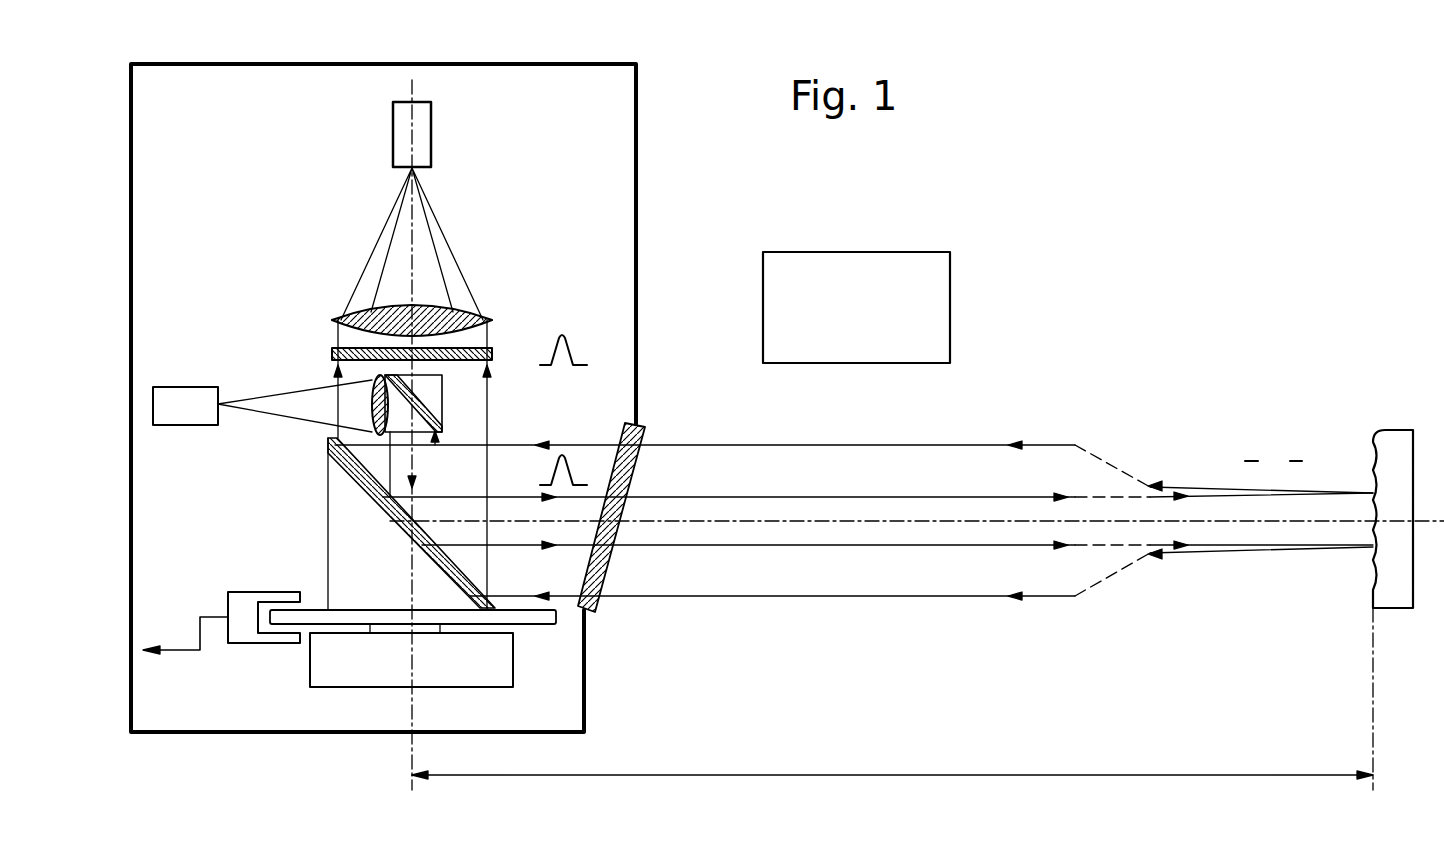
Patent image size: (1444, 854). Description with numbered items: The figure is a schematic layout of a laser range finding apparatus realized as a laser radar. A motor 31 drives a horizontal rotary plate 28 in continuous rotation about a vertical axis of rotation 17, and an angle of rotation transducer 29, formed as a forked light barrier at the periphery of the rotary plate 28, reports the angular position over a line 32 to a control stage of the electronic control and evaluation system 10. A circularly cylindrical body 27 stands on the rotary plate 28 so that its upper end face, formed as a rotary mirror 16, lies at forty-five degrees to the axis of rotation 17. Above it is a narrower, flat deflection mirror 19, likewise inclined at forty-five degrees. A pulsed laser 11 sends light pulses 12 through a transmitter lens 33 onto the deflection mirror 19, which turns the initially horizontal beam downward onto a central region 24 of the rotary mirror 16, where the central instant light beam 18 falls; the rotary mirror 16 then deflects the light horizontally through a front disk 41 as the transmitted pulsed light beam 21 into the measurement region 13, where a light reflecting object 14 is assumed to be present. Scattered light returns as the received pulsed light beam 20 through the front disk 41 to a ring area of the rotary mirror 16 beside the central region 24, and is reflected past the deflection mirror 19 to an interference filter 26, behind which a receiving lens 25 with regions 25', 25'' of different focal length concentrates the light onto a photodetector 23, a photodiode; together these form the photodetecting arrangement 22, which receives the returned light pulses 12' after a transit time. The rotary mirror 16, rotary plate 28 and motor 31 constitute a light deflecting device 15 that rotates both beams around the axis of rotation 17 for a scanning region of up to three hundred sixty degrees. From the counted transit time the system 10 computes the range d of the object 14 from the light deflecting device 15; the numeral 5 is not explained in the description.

The retroreflector surface 5 is at (1425, 518).
The electronic control and evaluation system 10 is at (935, 320).
The pulsed laser 11 is at (190, 400).
The light pulses 12 is at (577, 444).
The received light pulses 12' is at (581, 330).
The measurement region 13 is at (1273, 461).
The light reflecting object 14 is at (1398, 608).
The light deflecting device 15 is at (288, 662).
The rotary mirror 16 is at (350, 481).
The axis of rotation 17 is at (418, 694).
The central instant light beam 18 is at (415, 462).
The deflection mirror 19 is at (440, 410).
The received pulsed light beam 20 is at (800, 470).
The transmitted pulsed light beam 21 is at (877, 512).
The photodetecting arrangement 22 is at (464, 222).
The photodetector 23 is at (420, 136).
The central region 24 is at (423, 531).
The receiving lens 25 is at (426, 294).
The lens region 25' is at (332, 290).
The lens region 25'' is at (368, 284).
The interference filter 26 is at (493, 353).
The circularly cylindrical body 27 is at (342, 522).
The rotary plate 28 is at (365, 625).
The angle of rotation transducer 29 is at (245, 602).
The motor 31 is at (494, 662).
The line 32 is at (198, 630).
The transmitter lens 33 is at (372, 397).
The front disk 41 is at (640, 442).
The range d is at (862, 778).